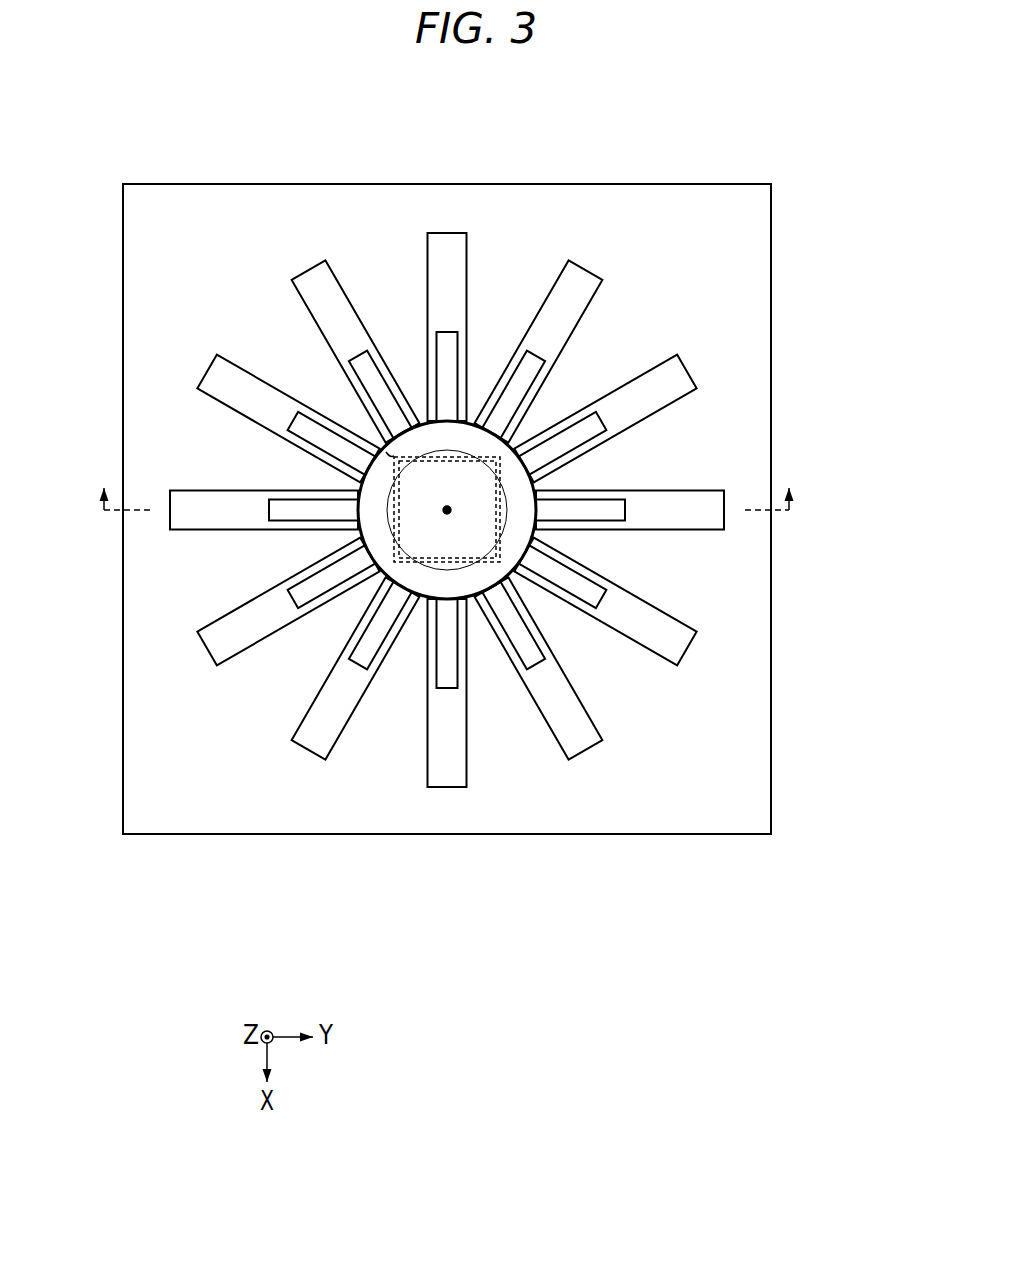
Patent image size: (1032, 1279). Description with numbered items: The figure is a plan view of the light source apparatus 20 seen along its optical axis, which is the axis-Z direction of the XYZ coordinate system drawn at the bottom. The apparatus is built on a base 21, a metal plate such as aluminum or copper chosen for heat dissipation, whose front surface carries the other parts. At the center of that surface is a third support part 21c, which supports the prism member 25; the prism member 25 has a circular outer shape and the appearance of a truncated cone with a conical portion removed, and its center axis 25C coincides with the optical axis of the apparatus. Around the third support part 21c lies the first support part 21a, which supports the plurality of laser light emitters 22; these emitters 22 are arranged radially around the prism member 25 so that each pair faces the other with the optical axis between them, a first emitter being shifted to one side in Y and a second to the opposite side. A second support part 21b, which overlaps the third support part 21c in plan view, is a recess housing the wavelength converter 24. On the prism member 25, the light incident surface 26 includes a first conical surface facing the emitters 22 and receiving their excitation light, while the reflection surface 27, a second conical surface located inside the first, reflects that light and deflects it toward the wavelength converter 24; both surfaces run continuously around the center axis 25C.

The light source apparatus 20 is at (701, 170).
The base 21 is at (773, 253).
The first support part 21a is at (640, 646).
The second support part 21b is at (398, 534).
The third support part 21c is at (493, 428).
The laser light emitters 22 is at (451, 226).
The wavelength converter 24 is at (404, 563).
The prism member 25 is at (473, 582).
The center axis 25C is at (447, 510).
The light incident surface 26 is at (386, 452).
The reflection surface 27 is at (447, 450).